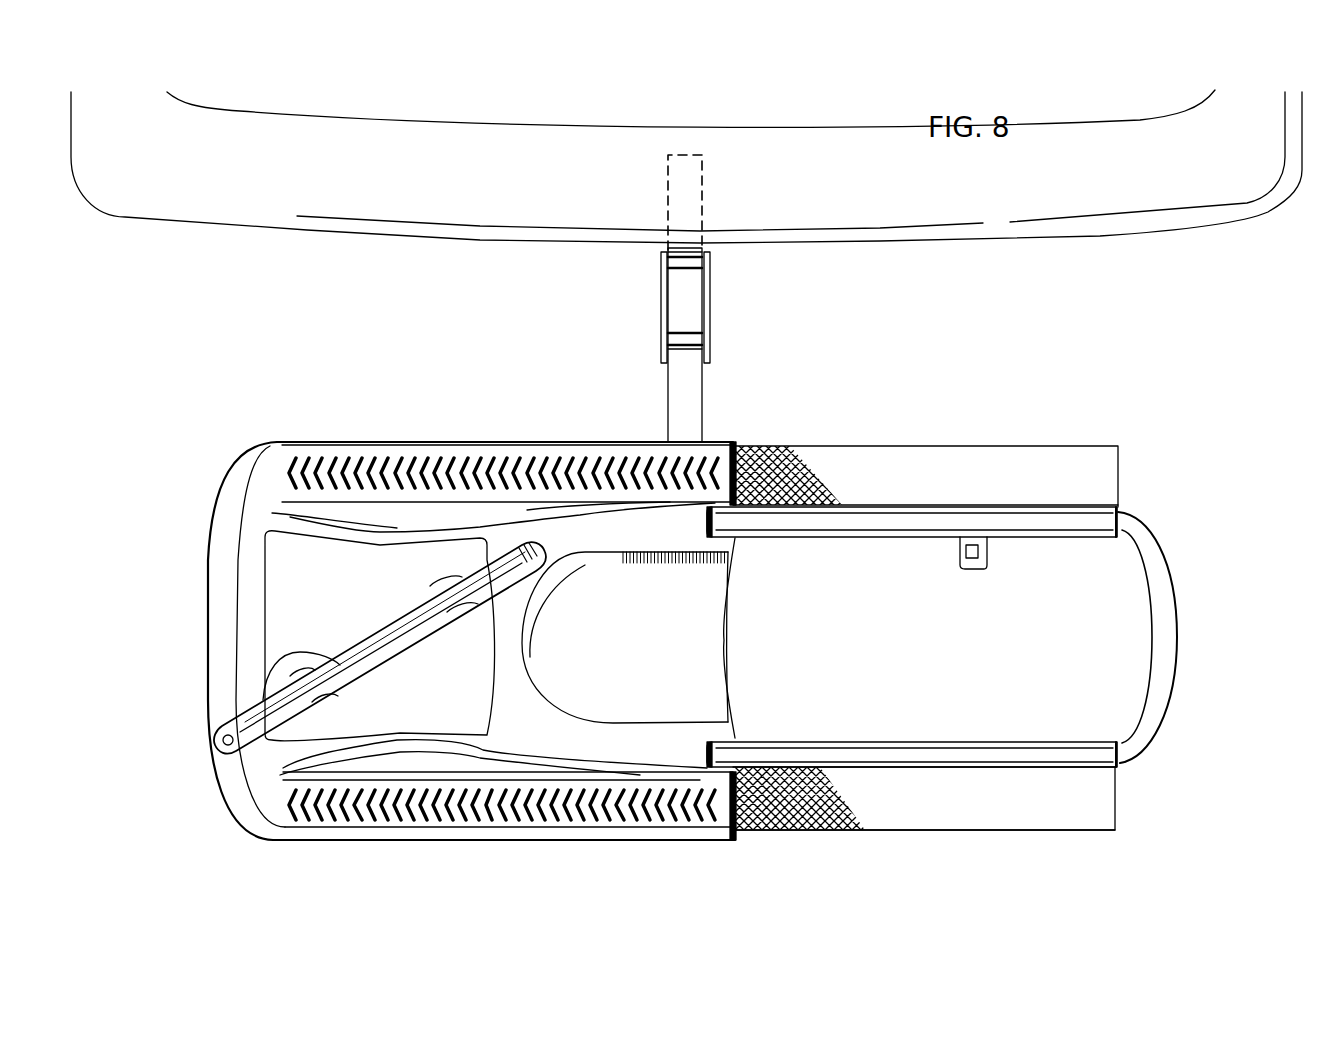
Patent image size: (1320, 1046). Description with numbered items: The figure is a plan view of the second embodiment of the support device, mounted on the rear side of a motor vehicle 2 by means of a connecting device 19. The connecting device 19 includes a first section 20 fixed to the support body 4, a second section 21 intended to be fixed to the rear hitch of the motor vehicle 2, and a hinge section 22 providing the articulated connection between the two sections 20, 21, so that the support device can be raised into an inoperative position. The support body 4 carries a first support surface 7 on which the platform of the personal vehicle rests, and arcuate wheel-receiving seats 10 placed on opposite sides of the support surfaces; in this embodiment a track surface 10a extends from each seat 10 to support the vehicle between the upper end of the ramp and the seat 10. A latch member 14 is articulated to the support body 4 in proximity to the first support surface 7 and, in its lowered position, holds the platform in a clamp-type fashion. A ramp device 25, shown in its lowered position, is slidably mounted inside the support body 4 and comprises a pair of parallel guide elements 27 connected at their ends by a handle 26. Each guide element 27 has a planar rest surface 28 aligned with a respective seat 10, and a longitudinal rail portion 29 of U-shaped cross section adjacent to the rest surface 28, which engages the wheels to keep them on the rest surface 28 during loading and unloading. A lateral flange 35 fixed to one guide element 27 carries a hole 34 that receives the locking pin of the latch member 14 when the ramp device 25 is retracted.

The motor vehicle 2 is at (312, 245).
The support body 4 is at (447, 398).
The first support surface 7 is at (300, 575).
The seat 10 is at (538, 442).
The track surface 10a is at (603, 442).
The latch member 14 is at (325, 656).
The connecting device 19 is at (726, 315).
The first section 20 is at (707, 395).
The second section 21 is at (702, 190).
The hinge section 22 is at (660, 305).
The ramp device 25 is at (1086, 404).
The handle 26 is at (1175, 585).
The guide element 27 is at (957, 433).
The planar rest surface 28 is at (857, 475).
The rail portion 29 is at (810, 520).
The hole 34 is at (958, 555).
The lateral flange 35 is at (986, 568).